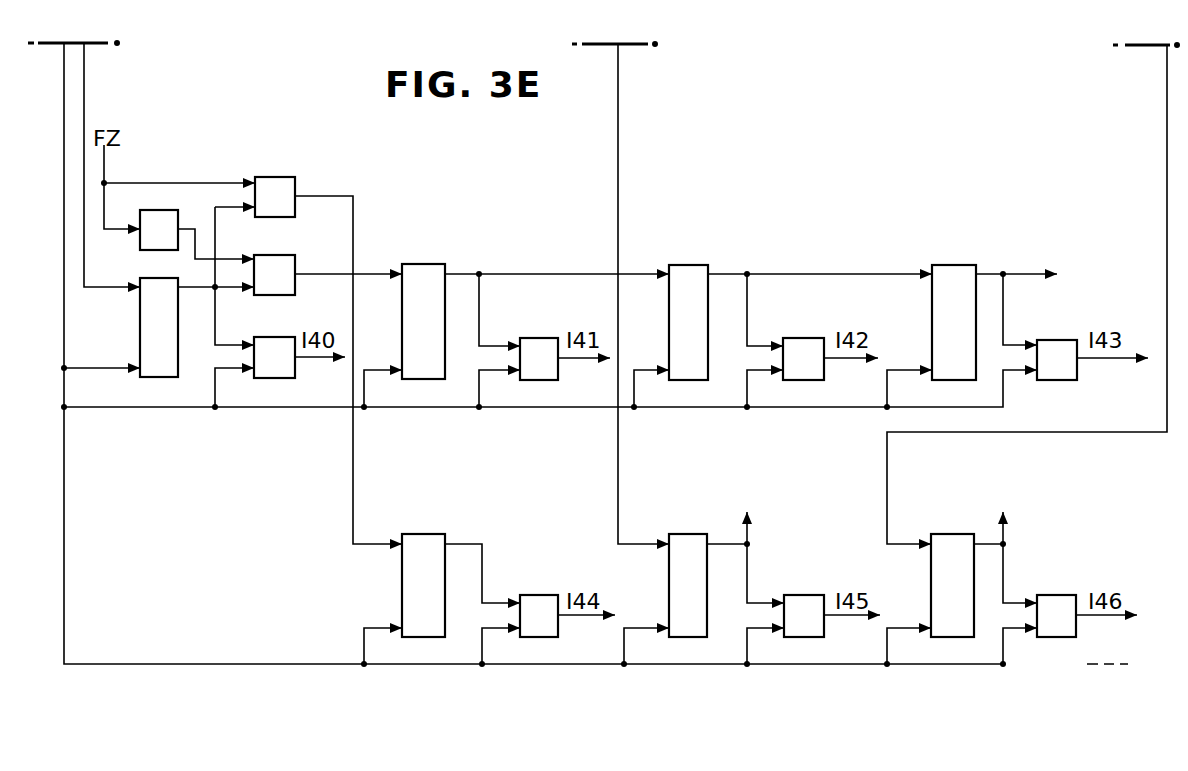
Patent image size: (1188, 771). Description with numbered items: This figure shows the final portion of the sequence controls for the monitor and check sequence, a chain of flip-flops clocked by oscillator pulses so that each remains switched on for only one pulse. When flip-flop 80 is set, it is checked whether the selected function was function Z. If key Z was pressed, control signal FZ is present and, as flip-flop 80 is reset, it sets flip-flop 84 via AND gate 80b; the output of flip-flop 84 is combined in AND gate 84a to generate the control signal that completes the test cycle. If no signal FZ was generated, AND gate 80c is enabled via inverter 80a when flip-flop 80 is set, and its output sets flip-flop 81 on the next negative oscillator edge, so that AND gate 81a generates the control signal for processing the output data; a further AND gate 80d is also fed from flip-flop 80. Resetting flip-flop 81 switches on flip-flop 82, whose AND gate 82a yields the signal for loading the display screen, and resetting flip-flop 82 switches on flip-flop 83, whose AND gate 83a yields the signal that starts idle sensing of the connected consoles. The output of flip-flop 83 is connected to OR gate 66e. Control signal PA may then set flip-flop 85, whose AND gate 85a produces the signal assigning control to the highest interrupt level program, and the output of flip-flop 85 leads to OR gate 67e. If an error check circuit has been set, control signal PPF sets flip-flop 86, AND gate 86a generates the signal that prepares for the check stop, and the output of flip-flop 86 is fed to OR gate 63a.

The flip-flop 80 is at (139, 318).
The inverter 80a is at (140, 248).
The AND gate 80b is at (277, 180).
The AND gate 80c is at (276, 262).
The AND gate 80d is at (274, 345).
The flip-flop 81 is at (413, 270).
The AND gate 81a is at (536, 343).
The flip-flop 82 is at (689, 270).
The AND gate 82a is at (806, 343).
The flip-flop 83 is at (950, 270).
The AND gate 83a is at (1056, 343).
The flip-flop 84 is at (413, 540).
The AND gate 84a is at (536, 600).
The flip-flop 85 is at (678, 540).
The AND gate 85a is at (806, 600).
The flip-flop 86 is at (945, 540).
The AND gate 86a is at (1058, 600).
The OR gate 66e is at (1041, 276).
The OR gate 67e is at (751, 512).
The OR gate 63a is at (1005, 512).